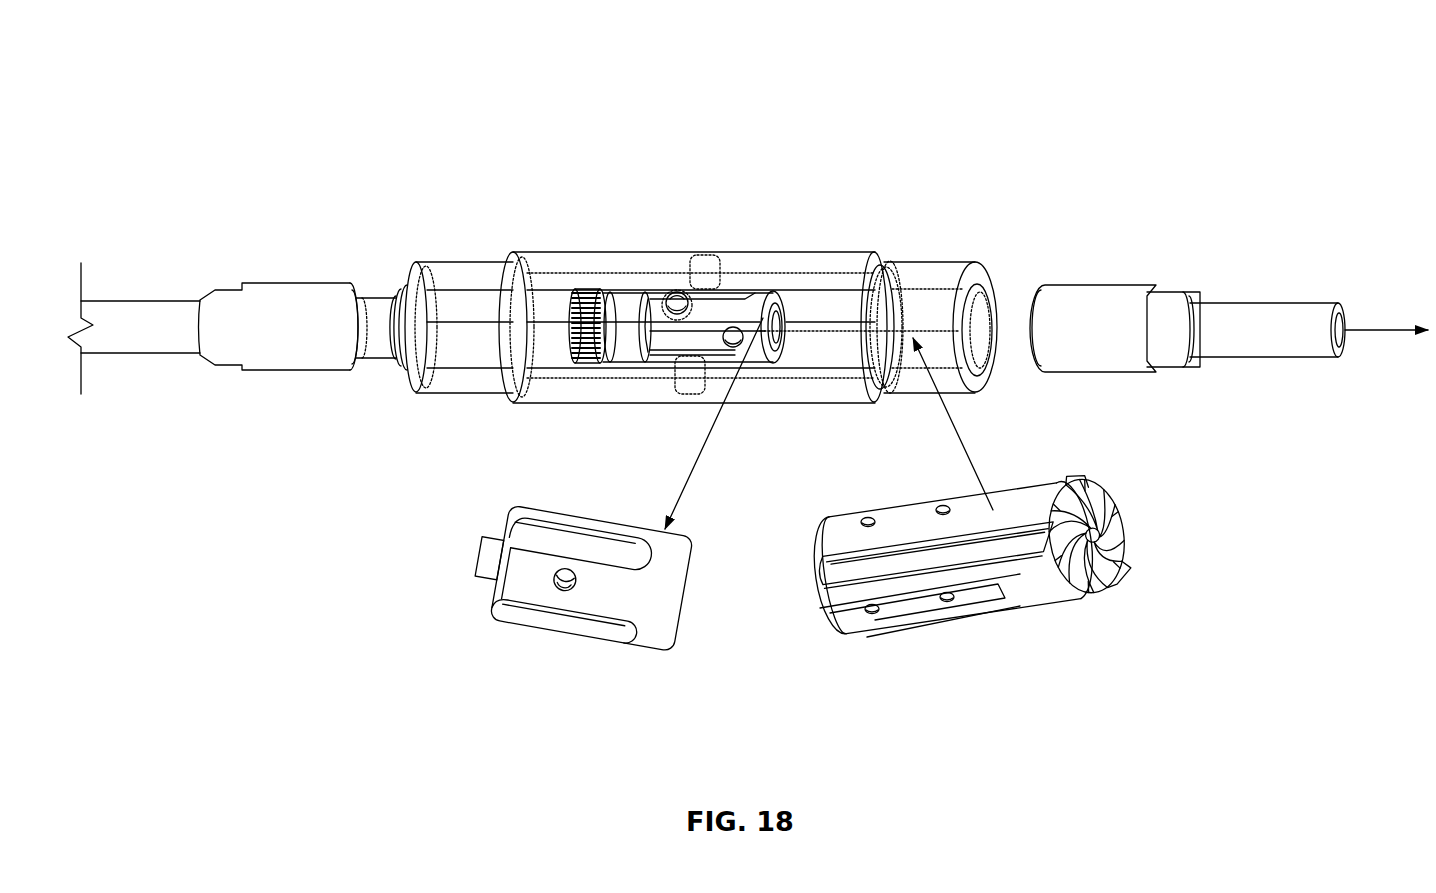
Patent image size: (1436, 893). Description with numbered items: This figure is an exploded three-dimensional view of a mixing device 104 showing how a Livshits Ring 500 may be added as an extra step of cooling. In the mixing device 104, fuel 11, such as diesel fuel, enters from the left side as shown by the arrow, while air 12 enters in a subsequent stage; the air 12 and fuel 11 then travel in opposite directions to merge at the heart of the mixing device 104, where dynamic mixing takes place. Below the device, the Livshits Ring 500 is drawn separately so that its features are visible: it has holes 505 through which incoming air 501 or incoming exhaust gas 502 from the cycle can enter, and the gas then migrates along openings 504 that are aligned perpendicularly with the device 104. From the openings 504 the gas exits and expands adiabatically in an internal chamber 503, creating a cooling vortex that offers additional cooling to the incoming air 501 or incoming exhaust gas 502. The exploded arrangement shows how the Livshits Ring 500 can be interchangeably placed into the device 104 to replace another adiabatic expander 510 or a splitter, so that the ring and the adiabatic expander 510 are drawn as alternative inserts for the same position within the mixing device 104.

The fuel 11 is at (285, 250).
The air 12 is at (708, 257).
The mixing device 104 is at (917, 156).
The Livshits Ring 500 is at (1002, 536).
The incoming air 501 is at (866, 518).
The incoming exhaust gas 502 is at (946, 601).
The internal chamber 503 is at (1082, 544).
The openings 504 is at (1100, 513).
The holes 505 is at (937, 555).
The adiabatic expander 510 is at (660, 633).